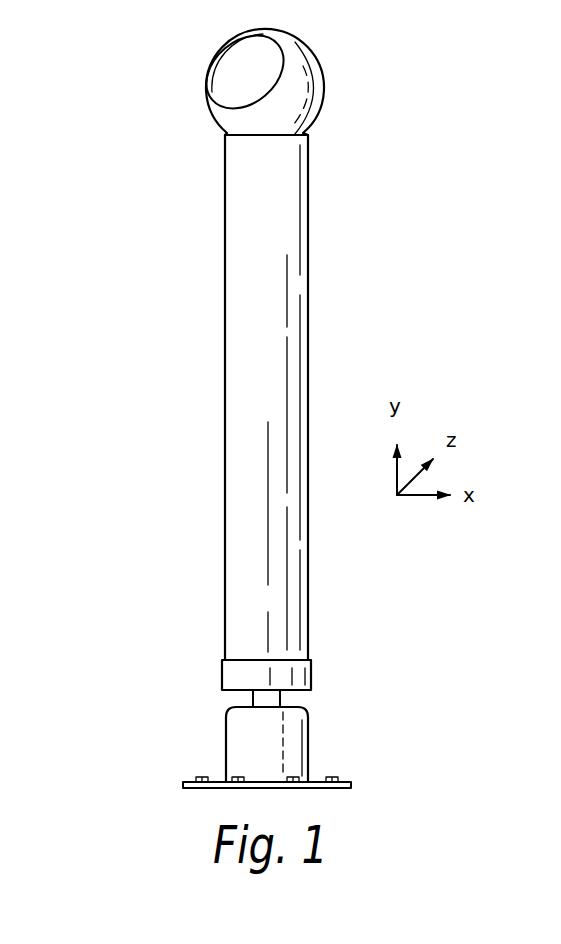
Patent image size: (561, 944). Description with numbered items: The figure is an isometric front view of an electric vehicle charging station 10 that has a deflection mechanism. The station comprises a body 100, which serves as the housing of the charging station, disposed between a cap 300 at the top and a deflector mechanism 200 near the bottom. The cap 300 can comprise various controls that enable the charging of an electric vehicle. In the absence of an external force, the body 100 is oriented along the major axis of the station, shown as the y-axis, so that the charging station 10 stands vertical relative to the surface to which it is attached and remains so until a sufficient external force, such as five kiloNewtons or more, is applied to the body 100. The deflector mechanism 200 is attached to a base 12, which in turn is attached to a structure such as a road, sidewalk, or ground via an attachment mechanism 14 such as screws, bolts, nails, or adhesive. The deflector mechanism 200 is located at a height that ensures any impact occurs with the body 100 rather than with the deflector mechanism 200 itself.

The electric vehicle charging station 10 is at (162, 158).
The cap 300 is at (300, 92).
The body 100 is at (312, 337).
The deflector mechanism 200 is at (289, 698).
The base 12 is at (187, 779).
The attachment mechanism 14 is at (335, 776).